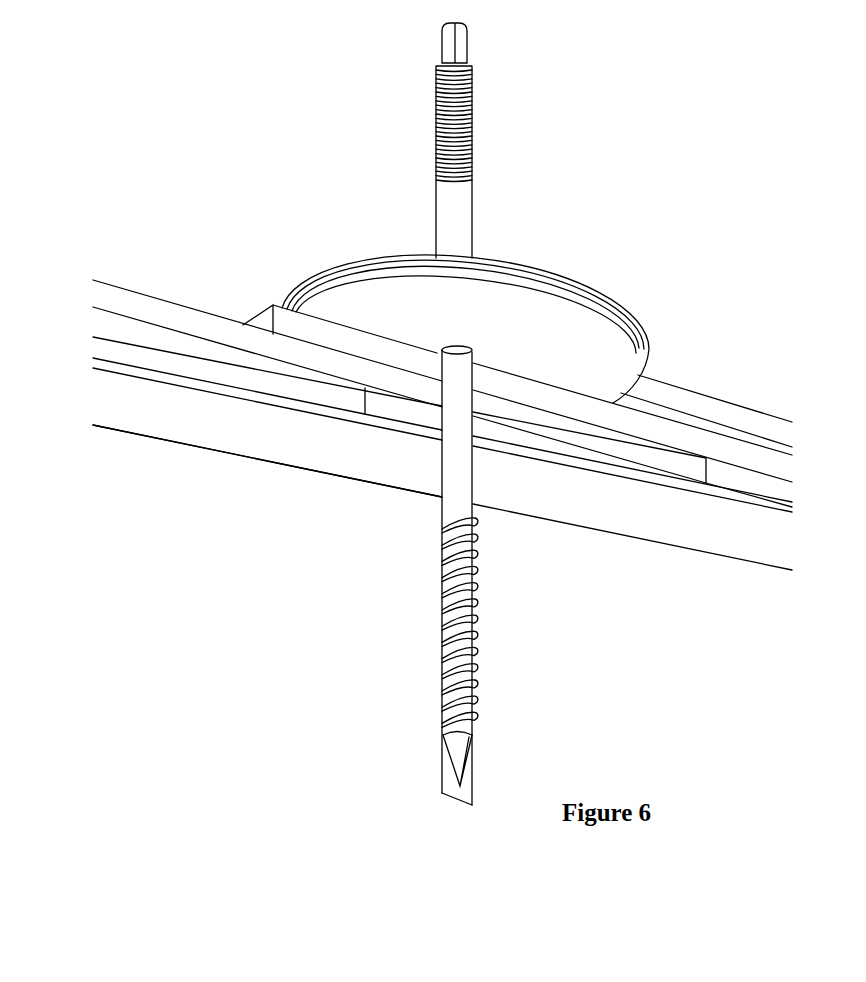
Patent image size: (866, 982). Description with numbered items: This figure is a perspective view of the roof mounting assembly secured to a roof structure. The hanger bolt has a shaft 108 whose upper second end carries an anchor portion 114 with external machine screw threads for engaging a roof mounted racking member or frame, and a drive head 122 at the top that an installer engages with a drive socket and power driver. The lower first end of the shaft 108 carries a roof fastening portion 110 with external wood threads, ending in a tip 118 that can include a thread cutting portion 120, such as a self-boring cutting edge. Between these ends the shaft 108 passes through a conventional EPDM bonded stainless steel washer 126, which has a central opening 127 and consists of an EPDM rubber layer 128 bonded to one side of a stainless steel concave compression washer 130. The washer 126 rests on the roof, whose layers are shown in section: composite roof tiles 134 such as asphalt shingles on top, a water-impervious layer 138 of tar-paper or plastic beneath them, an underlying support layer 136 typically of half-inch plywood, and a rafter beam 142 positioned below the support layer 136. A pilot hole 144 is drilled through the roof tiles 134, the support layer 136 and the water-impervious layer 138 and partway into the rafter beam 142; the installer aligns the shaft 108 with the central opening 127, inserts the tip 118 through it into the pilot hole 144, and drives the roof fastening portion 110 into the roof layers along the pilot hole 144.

The shaft 108 is at (458, 468).
The roof fastening portion 110 is at (440, 626).
The anchor portion 114 is at (474, 104).
The tip 118 is at (455, 741).
The thread cutting portion 120 is at (455, 764).
The drive head 122 is at (470, 48).
The washer 126 is at (550, 266).
The central opening 127 is at (474, 355).
The EPDM rubber layer 128 is at (565, 328).
The stainless steel concave compression washer 130 is at (603, 288).
The composite roof tiles 134 is at (744, 420).
The support layer 136 is at (770, 535).
The water-impervious layer 138 is at (690, 486).
The rafter beam 142 is at (660, 707).
The pilot hole 144 is at (450, 785).